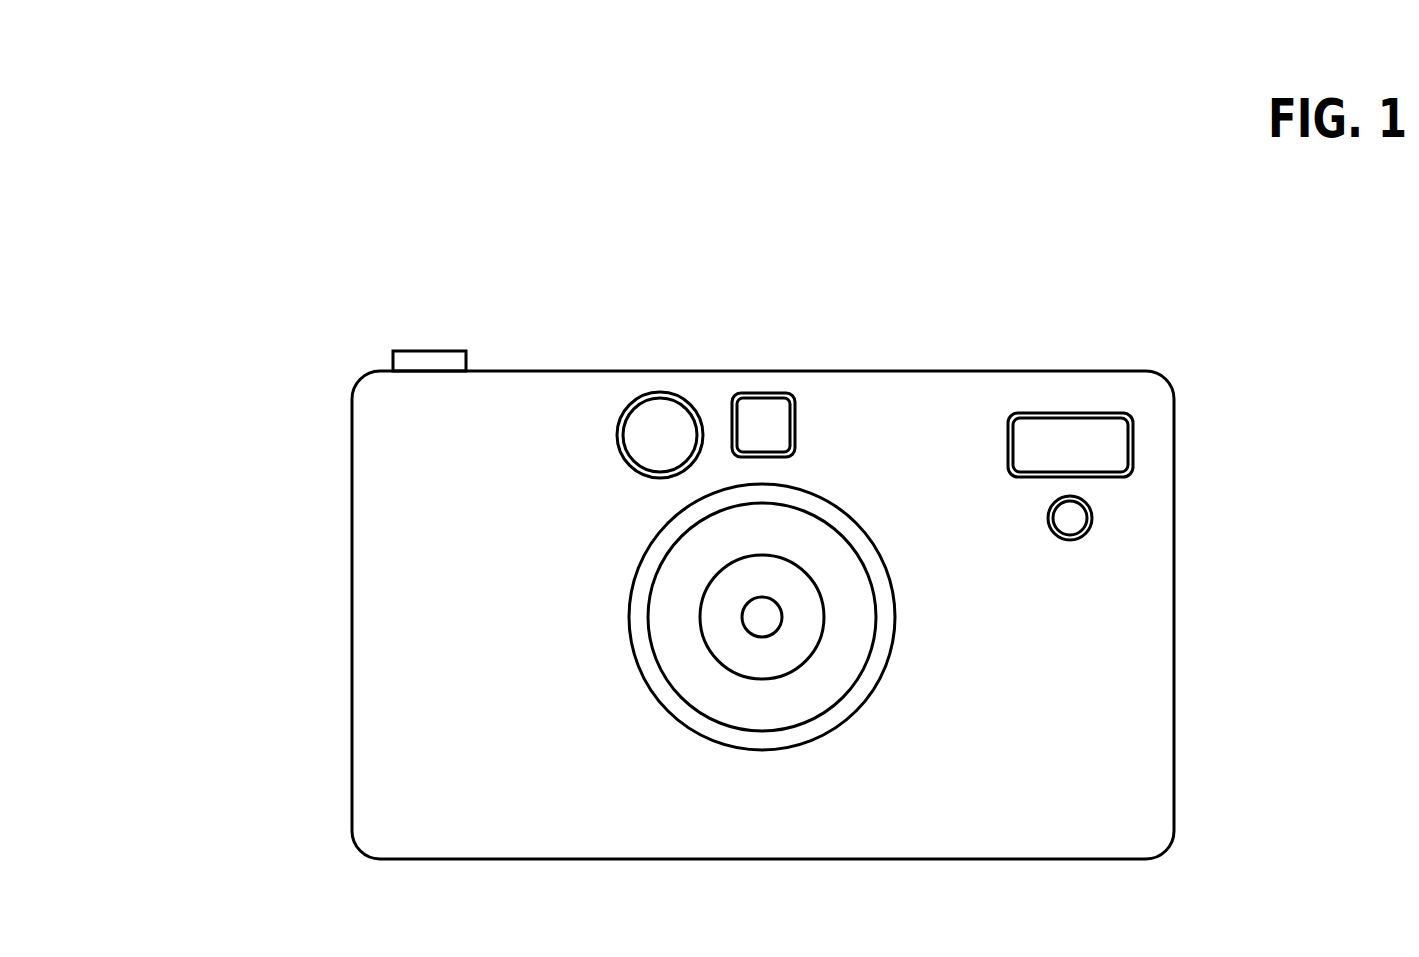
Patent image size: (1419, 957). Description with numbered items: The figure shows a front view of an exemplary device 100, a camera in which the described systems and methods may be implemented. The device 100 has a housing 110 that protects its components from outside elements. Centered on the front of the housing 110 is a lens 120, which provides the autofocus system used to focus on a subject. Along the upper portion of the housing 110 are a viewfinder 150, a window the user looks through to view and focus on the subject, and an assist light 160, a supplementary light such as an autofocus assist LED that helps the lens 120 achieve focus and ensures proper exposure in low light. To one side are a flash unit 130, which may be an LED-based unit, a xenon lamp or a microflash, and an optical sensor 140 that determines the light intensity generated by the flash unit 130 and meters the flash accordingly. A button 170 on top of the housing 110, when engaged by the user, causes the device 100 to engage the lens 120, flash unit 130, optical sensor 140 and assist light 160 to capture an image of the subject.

The device 100 is at (176, 69).
The housing 110 is at (351, 618).
The lens 120 is at (895, 620).
The flash unit 130 is at (1072, 443).
The optical sensor 140 is at (1072, 518).
The viewfinder 150 is at (762, 413).
The assist light 160 is at (660, 413).
The button 170 is at (430, 363).